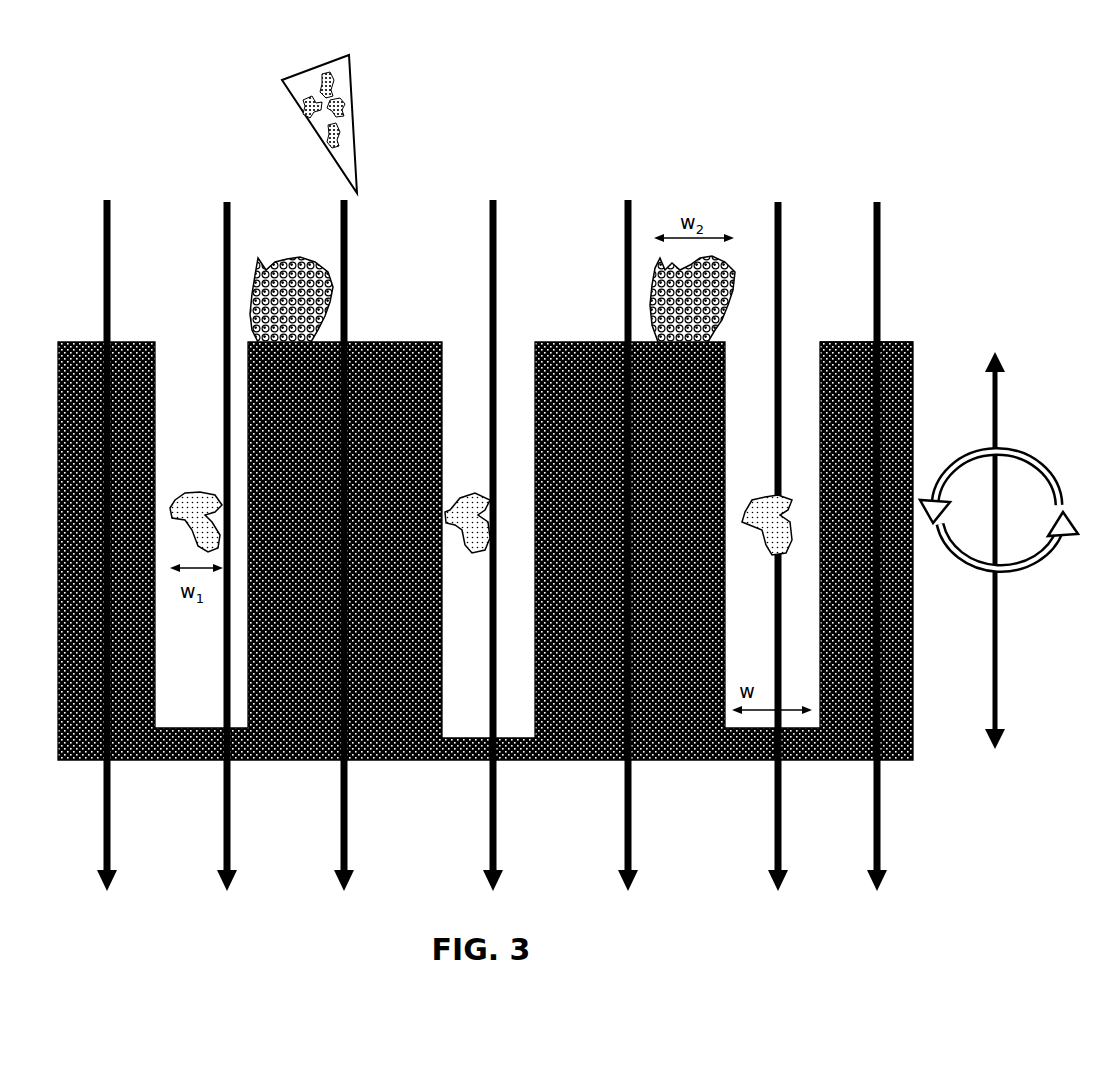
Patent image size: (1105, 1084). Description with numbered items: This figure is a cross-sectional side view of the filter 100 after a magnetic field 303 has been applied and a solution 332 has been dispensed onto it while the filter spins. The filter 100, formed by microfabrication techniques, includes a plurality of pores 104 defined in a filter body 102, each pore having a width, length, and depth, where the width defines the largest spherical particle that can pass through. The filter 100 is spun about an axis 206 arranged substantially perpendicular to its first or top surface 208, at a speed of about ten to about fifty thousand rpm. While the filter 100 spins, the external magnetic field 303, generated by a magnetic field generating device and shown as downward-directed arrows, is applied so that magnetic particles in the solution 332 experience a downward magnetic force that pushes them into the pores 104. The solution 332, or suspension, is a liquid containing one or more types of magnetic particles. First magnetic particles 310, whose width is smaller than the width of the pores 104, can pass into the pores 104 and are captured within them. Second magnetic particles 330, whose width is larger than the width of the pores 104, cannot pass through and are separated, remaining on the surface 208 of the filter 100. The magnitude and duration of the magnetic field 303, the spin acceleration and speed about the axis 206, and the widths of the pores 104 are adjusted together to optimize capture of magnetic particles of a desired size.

The filter 100 is at (813, 115).
The substrate 102 is at (372, 595).
The pores 104 is at (176, 336).
The axis 206 is at (998, 402).
The surface 208 is at (900, 342).
The magnetic field 303 is at (903, 177).
The first magnetic particles 310 is at (203, 493).
The second magnetic particles 330 is at (295, 258).
The solution 332 is at (295, 97).